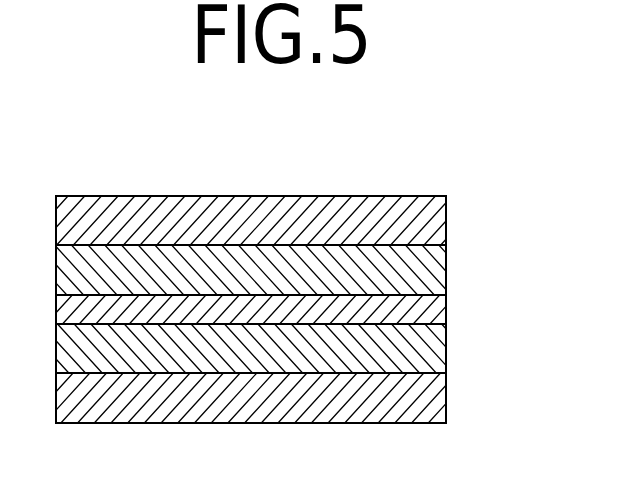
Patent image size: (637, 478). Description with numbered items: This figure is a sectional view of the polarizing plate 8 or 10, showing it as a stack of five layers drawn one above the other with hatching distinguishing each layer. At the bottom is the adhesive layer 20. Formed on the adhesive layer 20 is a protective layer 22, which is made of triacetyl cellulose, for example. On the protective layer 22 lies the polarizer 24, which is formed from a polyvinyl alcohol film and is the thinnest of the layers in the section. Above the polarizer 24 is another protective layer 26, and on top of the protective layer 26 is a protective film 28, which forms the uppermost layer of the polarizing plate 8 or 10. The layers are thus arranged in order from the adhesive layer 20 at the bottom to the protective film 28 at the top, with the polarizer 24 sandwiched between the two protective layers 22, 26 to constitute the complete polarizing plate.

The polarizing plate 8 is at (299, 268).
The polarizing plate 10 is at (308, 192).
The adhesive layer 20 is at (437, 398).
The protective layer 22 is at (437, 345).
The polarizer 24 is at (437, 310).
The protective layer 26 is at (435, 271).
The protective film 28 is at (437, 208).